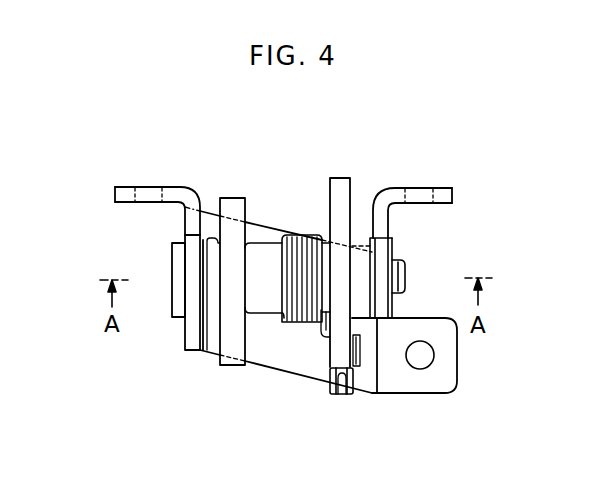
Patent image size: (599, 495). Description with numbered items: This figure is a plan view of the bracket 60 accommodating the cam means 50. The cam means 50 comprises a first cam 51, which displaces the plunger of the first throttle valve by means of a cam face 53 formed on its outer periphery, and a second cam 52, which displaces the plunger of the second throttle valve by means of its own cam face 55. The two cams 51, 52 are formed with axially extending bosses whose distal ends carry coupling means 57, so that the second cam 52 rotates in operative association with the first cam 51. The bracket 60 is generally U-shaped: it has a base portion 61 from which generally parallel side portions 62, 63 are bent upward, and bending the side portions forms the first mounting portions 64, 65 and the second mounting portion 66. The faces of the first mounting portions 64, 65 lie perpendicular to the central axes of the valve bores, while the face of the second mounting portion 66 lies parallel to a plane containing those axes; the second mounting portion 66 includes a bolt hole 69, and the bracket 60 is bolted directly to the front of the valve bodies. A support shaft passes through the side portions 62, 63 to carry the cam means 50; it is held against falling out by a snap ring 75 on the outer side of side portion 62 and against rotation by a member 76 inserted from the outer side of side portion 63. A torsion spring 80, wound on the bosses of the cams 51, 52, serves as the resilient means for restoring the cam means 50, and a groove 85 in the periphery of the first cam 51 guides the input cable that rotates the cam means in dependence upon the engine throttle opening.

The cam means 50 is at (281, 199).
The first cam 51 is at (337, 352).
The second cam 52 is at (228, 347).
The cam face 53 is at (340, 186).
The cam face 55 is at (232, 202).
The coupling means 57 is at (278, 293).
The bracket 60 is at (272, 365).
The base portion 61 is at (272, 365).
The side portion 62 is at (193, 338).
The side portion 63 is at (380, 305).
The first mounting portion 64 is at (422, 193).
The first mounting portion 65 is at (141, 193).
The second mounting portion 66 is at (447, 362).
The bolt hole 69 is at (420, 364).
The snap ring 75 is at (392, 250).
The member 76 is at (175, 270).
The torsion spring 80 is at (307, 237).
The groove 85 is at (340, 395).